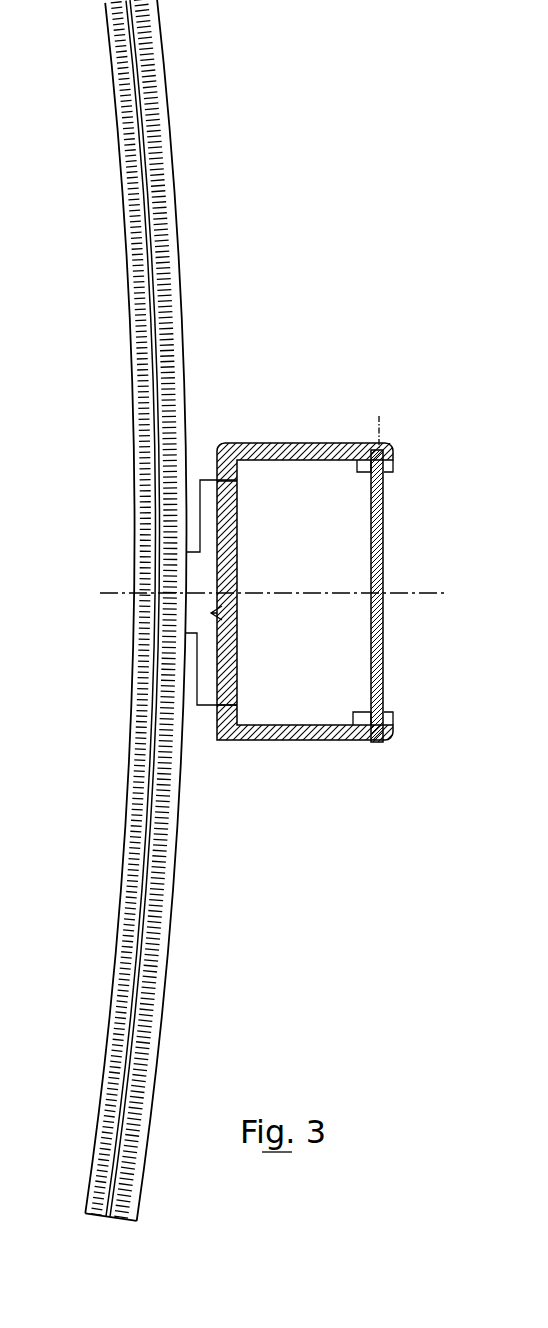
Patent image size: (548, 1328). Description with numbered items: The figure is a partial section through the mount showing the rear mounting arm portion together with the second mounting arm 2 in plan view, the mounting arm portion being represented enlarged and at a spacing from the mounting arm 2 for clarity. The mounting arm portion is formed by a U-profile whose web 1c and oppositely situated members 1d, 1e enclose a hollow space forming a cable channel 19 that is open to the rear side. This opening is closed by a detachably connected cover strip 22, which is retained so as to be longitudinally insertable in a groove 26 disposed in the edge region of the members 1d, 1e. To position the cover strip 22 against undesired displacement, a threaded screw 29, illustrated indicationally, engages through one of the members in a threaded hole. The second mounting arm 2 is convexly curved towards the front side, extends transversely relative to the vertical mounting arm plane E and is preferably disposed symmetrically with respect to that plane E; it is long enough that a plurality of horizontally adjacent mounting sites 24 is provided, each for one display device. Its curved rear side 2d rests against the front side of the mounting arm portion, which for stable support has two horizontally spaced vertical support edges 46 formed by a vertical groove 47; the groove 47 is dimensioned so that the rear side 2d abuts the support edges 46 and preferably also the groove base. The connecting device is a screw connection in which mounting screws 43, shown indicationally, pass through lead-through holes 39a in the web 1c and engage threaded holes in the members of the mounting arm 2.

The second mounting arm 2 is at (142, 610).
The curved rear side 2d is at (182, 320).
The mounting sites 24 is at (122, 213).
The mounting screws 43 is at (241, 452).
The member of the U-profile 1d is at (315, 443).
The member of the U-profile 1e is at (299, 742).
The web 1c is at (237, 535).
The lead-through holes 39a is at (237, 482).
The vertical support edges 46 is at (262, 661).
The vertical groove 47 is at (224, 612).
The cable channel 19 is at (325, 566).
The cover strip 22 is at (386, 520).
The groove 26 is at (393, 462).
The threaded screw 29 is at (383, 422).
The mounting arm plane E is at (422, 593).